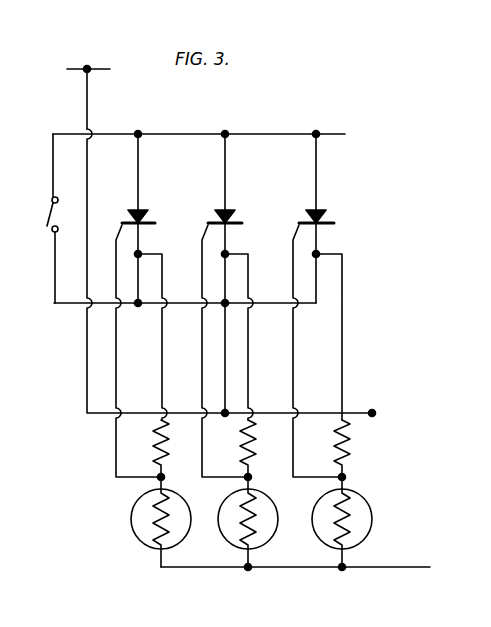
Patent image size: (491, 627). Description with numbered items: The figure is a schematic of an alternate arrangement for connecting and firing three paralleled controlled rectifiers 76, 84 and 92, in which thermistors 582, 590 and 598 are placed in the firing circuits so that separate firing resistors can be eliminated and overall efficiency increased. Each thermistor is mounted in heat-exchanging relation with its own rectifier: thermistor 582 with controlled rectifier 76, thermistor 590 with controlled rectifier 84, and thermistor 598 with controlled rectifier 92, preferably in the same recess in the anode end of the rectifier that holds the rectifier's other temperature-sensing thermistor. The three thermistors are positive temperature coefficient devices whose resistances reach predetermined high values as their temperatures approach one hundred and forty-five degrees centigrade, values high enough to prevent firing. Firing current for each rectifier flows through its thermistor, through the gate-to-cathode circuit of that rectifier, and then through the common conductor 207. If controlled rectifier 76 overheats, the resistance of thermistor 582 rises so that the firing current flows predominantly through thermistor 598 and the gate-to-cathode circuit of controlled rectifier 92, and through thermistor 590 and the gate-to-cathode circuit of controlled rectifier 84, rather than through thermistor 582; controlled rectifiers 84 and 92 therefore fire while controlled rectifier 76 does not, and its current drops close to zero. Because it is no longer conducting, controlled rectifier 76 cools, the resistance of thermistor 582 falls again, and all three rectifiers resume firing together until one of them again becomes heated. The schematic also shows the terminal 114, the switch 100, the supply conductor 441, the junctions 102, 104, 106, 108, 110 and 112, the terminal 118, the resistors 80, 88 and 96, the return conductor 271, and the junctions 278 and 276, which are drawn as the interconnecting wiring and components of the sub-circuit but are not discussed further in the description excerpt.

The input terminal 114 is at (87, 66).
The conductor 207 is at (87, 365).
The supply bus 441 is at (338, 139).
The switch 100 is at (50, 236).
The junction 102 is at (140, 131).
The junction 104 is at (227, 131).
The junction 106 is at (318, 131).
The controlled rectifier 76 is at (143, 212).
The controlled rectifier 84 is at (230, 212).
The controlled rectifier 92 is at (321, 212).
The junction 108 is at (138, 307).
The junction 110 is at (226, 307).
The junction 112 is at (225, 416).
The terminal 118 is at (374, 410).
The resistor 80 is at (155, 425).
The resistor 88 is at (243, 450).
The resistor 96 is at (350, 440).
The thermistor 582 is at (133, 522).
The thermistor 590 is at (222, 537).
The thermistor 598 is at (372, 522).
The return bus 271 is at (413, 568).
The junction 278 is at (248, 570).
The junction 276 is at (342, 570).